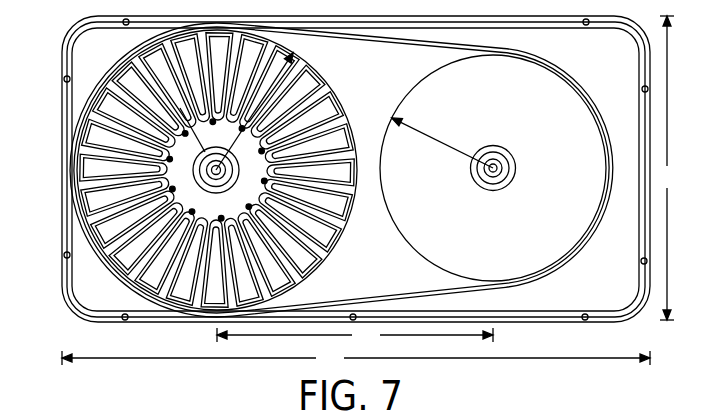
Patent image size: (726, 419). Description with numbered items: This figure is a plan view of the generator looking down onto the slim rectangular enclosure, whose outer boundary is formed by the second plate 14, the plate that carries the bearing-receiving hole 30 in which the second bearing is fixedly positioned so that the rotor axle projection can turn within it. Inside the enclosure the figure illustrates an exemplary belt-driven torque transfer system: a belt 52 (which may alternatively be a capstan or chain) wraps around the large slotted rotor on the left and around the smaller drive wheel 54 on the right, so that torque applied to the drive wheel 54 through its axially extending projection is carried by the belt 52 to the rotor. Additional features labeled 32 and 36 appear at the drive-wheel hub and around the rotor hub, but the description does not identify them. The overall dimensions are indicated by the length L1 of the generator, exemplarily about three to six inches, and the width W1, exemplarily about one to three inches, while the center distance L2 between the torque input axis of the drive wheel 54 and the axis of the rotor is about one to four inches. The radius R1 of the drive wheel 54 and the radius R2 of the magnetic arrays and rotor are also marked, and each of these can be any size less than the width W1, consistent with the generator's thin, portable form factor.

The second plate 14 is at (598, 40).
The hole in the second plate 30 is at (208, 175).
The driven pulley shaft / hub 32 is at (492, 170).
The fastener holes 36 is at (243, 132).
The belt 52 is at (345, 38).
The drive wheel 54 is at (403, 243).
The radius of the drive wheel R1 is at (442, 143).
The radius of the magnetic arrays/rotor R2 is at (252, 111).
The width of the generator W1 is at (668, 168).
The length of the generator L1 is at (356, 360).
The distance between the torque input axis and the rotor axis L2 is at (355, 337).